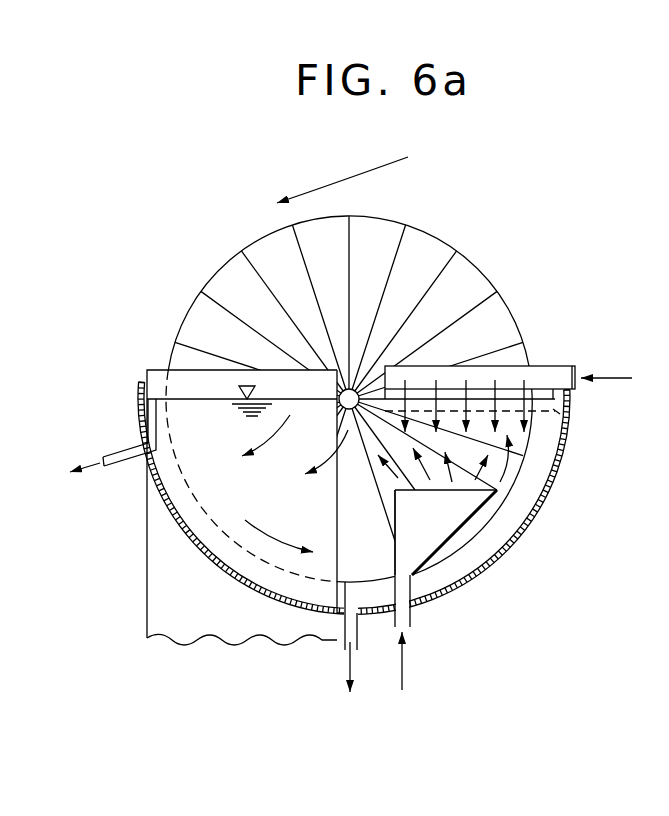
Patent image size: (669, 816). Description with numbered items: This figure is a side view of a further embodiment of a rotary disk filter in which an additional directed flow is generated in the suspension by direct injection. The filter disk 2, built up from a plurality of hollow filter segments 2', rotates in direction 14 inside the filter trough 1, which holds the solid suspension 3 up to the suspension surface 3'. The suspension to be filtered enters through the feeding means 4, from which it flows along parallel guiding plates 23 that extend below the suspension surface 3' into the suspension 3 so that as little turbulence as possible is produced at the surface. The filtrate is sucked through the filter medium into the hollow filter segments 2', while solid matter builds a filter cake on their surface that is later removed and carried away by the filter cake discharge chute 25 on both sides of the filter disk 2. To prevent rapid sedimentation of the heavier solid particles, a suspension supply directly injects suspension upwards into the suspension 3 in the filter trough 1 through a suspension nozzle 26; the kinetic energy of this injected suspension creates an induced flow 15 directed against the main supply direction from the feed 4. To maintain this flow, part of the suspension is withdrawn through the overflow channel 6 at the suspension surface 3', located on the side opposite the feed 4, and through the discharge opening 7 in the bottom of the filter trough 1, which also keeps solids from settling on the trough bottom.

The filter trough 1 is at (540, 527).
The filter disk 2 is at (349, 377).
The filter segments 2' is at (256, 293).
The solid suspension 3 is at (354, 540).
The suspension surface 3' is at (221, 340).
The feeding means 4 is at (517, 367).
The overflow channel 6 is at (127, 453).
The discharge opening 7 is at (347, 673).
The direction of rotation 14 is at (400, 155).
The induced flow 15 is at (545, 433).
The guiding plates 23 is at (556, 411).
The filter cake discharge chute 25 is at (165, 592).
The suspension nozzle 26 is at (447, 515).